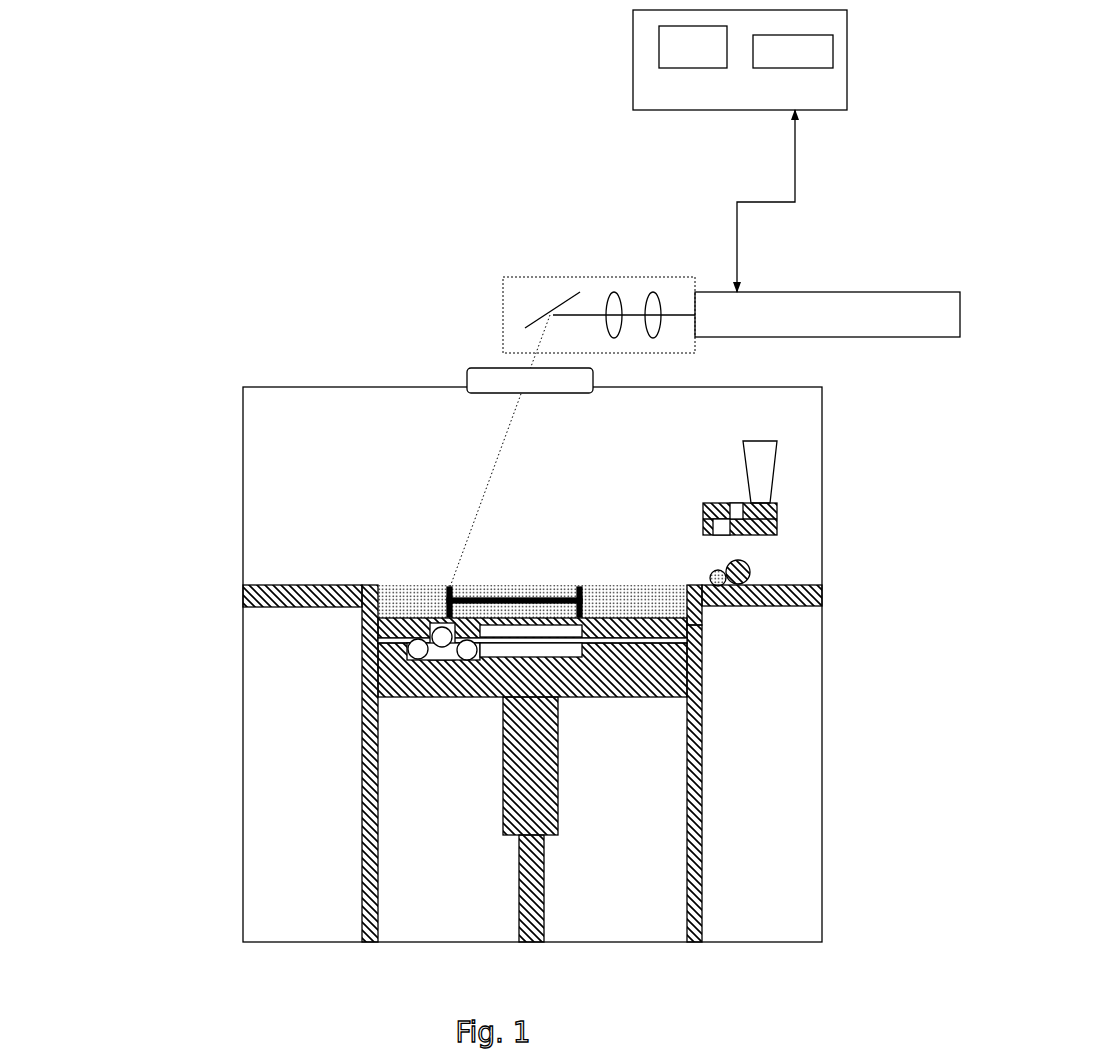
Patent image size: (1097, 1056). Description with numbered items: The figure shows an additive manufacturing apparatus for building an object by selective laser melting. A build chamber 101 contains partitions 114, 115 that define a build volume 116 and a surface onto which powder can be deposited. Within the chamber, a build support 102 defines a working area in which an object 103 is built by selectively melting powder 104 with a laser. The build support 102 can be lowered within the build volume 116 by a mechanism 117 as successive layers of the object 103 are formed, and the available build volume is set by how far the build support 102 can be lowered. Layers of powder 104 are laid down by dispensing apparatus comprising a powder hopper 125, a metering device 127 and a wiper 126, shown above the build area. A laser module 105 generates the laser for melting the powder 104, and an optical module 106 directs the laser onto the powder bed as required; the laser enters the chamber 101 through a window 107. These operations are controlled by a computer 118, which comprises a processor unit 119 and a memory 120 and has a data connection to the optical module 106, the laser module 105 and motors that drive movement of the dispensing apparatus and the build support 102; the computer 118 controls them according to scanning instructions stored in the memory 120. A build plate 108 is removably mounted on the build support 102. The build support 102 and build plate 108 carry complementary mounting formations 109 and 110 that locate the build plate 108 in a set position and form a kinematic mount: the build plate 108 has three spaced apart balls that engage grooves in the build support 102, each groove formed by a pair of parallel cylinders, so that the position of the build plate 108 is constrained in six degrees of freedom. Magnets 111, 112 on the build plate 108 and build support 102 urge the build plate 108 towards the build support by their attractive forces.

The build chamber 101 is at (242, 415).
The build support 102 is at (618, 678).
The object 103 is at (533, 605).
The powder 104 is at (415, 609).
The laser module 105 is at (833, 290).
The optical module 106 is at (615, 277).
The window 107 is at (523, 375).
The build plate 108 is at (670, 630).
The mounting formations 109 is at (415, 650).
The mounting formations 110 is at (434, 627).
The magnet 111 is at (533, 655).
The magnet 112 is at (570, 625).
The partition 114 is at (780, 593).
The partition 115 is at (703, 802).
The build volume 116 is at (690, 607).
The mechanism 117 is at (535, 763).
The computer 118 is at (633, 88).
The processor unit 119 is at (662, 47).
The memory 120 is at (810, 48).
The powder hopper 125 is at (785, 460).
The wiper 126 is at (755, 562).
The metering device 127 is at (780, 518).